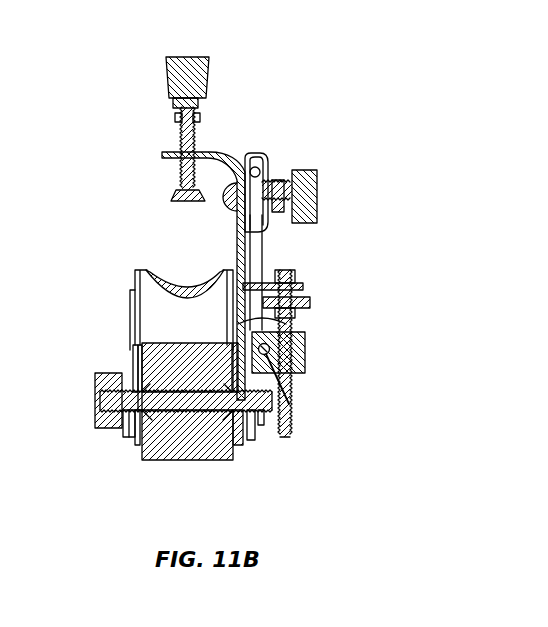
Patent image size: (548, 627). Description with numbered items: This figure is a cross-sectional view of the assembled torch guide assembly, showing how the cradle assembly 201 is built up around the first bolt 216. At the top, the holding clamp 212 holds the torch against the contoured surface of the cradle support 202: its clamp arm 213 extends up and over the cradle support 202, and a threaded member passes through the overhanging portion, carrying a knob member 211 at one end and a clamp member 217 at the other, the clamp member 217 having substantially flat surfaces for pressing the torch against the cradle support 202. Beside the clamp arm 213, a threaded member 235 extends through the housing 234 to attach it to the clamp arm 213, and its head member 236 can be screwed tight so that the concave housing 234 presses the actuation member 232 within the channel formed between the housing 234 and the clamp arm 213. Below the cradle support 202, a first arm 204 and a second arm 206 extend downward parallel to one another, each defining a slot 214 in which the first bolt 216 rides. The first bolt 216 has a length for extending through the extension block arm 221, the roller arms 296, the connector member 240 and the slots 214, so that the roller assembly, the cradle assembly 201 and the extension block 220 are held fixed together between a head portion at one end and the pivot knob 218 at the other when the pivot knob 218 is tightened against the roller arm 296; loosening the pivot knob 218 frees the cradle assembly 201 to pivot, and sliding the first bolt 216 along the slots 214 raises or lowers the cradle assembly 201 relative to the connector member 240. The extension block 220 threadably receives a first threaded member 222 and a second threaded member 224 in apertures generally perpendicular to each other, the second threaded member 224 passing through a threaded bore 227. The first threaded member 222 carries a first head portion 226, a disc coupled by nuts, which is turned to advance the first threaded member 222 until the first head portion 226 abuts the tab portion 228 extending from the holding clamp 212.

The cradle assembly 201 is at (120, 142).
The cradle support 202 is at (187, 290).
The first arm 204 is at (237, 310).
The second arm 206 is at (130, 311).
The knob member 211 is at (190, 58).
The holding clamp 212 is at (275, 132).
The clamp arm 213 is at (210, 153).
The slot 214 is at (133, 352).
The first bolt 216 is at (170, 412).
The clamp member 217 is at (172, 197).
The pivot knob 218 is at (101, 378).
The extension block 220 is at (306, 355).
The extension block arm 221 is at (261, 428).
The first threaded member 222 is at (292, 328).
The second threaded member 224 is at (270, 356).
The first head portion 226 is at (311, 303).
The threaded bore 227 is at (289, 404).
The tab portion 228 is at (266, 283).
The actuation member 232 is at (257, 246).
The housing 234 is at (263, 168).
The threaded member 235 is at (298, 185).
The head member 236 is at (317, 207).
The connector member 240 is at (158, 460).
The roller arms 296 is at (128, 437).